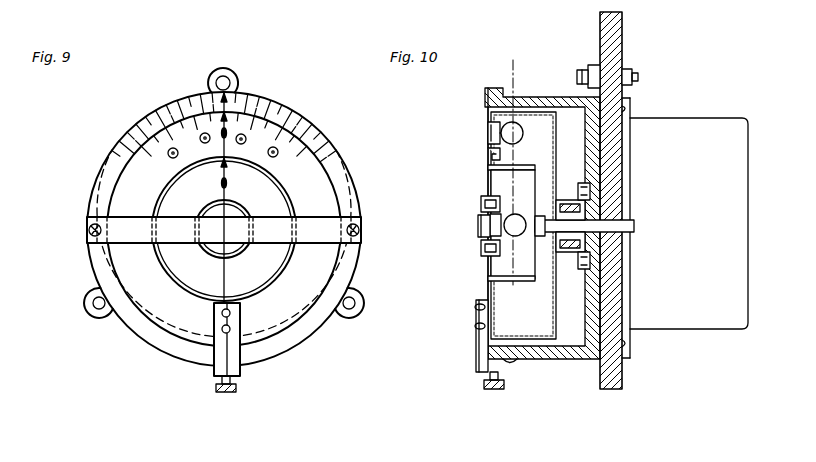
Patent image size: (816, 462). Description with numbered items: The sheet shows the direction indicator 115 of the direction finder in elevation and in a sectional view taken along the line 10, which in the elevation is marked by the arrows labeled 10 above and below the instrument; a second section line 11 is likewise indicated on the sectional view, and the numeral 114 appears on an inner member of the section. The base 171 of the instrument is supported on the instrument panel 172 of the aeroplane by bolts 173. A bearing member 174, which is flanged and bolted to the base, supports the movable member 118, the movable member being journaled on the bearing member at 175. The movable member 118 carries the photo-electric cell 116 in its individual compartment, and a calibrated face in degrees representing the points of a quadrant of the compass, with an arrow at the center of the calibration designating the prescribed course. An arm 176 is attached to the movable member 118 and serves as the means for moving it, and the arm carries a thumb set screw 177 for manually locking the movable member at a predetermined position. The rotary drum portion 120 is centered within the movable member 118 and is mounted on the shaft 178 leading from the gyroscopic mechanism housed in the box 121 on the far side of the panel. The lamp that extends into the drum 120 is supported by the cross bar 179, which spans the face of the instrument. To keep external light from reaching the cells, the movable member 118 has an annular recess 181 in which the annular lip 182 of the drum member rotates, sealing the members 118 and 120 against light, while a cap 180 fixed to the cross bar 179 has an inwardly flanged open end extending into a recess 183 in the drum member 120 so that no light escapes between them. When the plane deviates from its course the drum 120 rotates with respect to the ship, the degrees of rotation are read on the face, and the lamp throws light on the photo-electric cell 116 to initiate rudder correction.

In FIG. 9, the section line 10 is at (223, 68).
In FIG. 10, the section line 11- 11 is at (534, 60).
In FIG. 10, the bearing support member 114 is at (521, 212).
In FIG. 9, the direction indicator 115 is at (280, 350).
In FIG. 10, the direction indicator 115 is at (558, 97).
In FIG. 10, the photo-electric cell 116 is at (517, 141).
In FIG. 9, the movable member 118 is at (290, 288).
In FIG. 10, the movable member 118 is at (490, 113).
In FIG. 9, the rotary drum portion 120 is at (224, 229).
In FIG. 10, the rotary drum portion 120 is at (488, 274).
In FIG. 10, the box 121 is at (685, 228).
In FIG. 10, the base 171 is at (548, 353).
In FIG. 10, the instrument panel 172 is at (622, 376).
In FIG. 10, the bolt 173 is at (639, 77).
In FIG. 10, the bearing member 174 is at (584, 186).
In FIG. 10, the journal 175 is at (568, 252).
In FIG. 10, the arm 176 is at (484, 360).
In FIG. 10, the thumb set screw 177 is at (492, 392).
In FIG. 10, the shaft 178 is at (620, 233).
In FIG. 9, the cross bar 179 is at (304, 241).
In FIG. 10, the cross bar 179 is at (478, 227).
In FIG. 9, the cap 180 is at (228, 241).
In FIG. 10, the cap 180 is at (481, 203).
In FIG. 9, the annular recess 181 is at (190, 290).
In FIG. 10, the annular recess 181 is at (488, 155).
In FIG. 10, the annular lip 182 is at (488, 168).
In FIG. 9, the recess 183 is at (218, 248).
In FIG. 10, the recess 183 is at (481, 254).